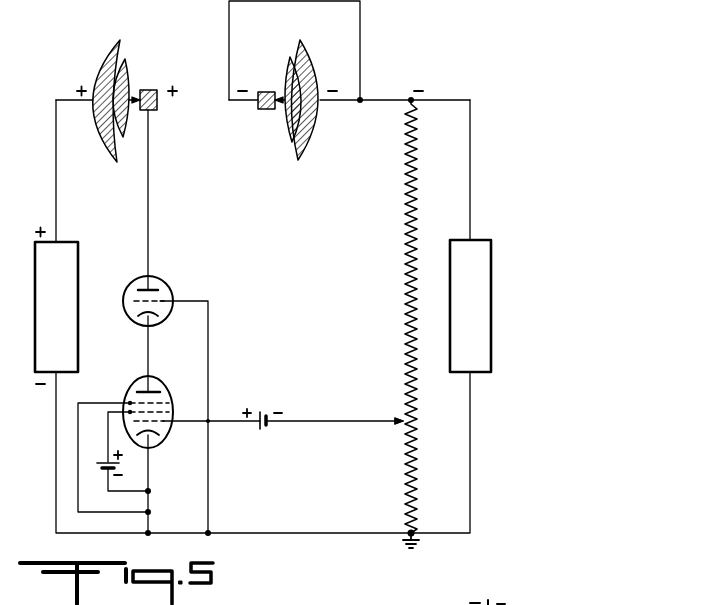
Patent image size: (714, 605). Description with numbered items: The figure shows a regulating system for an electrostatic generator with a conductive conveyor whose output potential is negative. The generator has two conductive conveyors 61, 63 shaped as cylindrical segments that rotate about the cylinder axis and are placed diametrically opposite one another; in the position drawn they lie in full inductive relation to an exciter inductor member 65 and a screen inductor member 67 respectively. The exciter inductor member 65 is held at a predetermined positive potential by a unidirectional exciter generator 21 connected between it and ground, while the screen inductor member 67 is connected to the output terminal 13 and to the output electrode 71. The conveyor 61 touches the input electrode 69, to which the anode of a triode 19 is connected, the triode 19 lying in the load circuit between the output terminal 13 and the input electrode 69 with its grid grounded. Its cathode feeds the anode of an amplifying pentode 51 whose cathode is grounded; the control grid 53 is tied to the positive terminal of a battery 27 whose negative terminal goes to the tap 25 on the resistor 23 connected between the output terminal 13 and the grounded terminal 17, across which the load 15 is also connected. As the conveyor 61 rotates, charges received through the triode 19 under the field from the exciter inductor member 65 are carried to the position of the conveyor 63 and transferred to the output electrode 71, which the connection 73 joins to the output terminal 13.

The output terminal 13 is at (411, 100).
The load 15 is at (491, 246).
The grounded terminal 17 is at (414, 531).
The triode 19 is at (158, 284).
The unidirectional exciter generator 21 is at (78, 258).
The resistor 23 is at (405, 272).
The tap 25 is at (406, 421).
The battery 27 is at (262, 430).
The amplifying pentode 51 is at (167, 379).
The control grid 53 is at (162, 423).
The conductive conveyor 61 is at (127, 62).
The conductive conveyor 63 is at (286, 139).
The exciter inductor member 65 is at (104, 52).
The screen inductor member 67 is at (313, 142).
The input electrode 69 is at (157, 108).
The output electrode 71 is at (257, 109).
The connection 73 is at (318, 1).